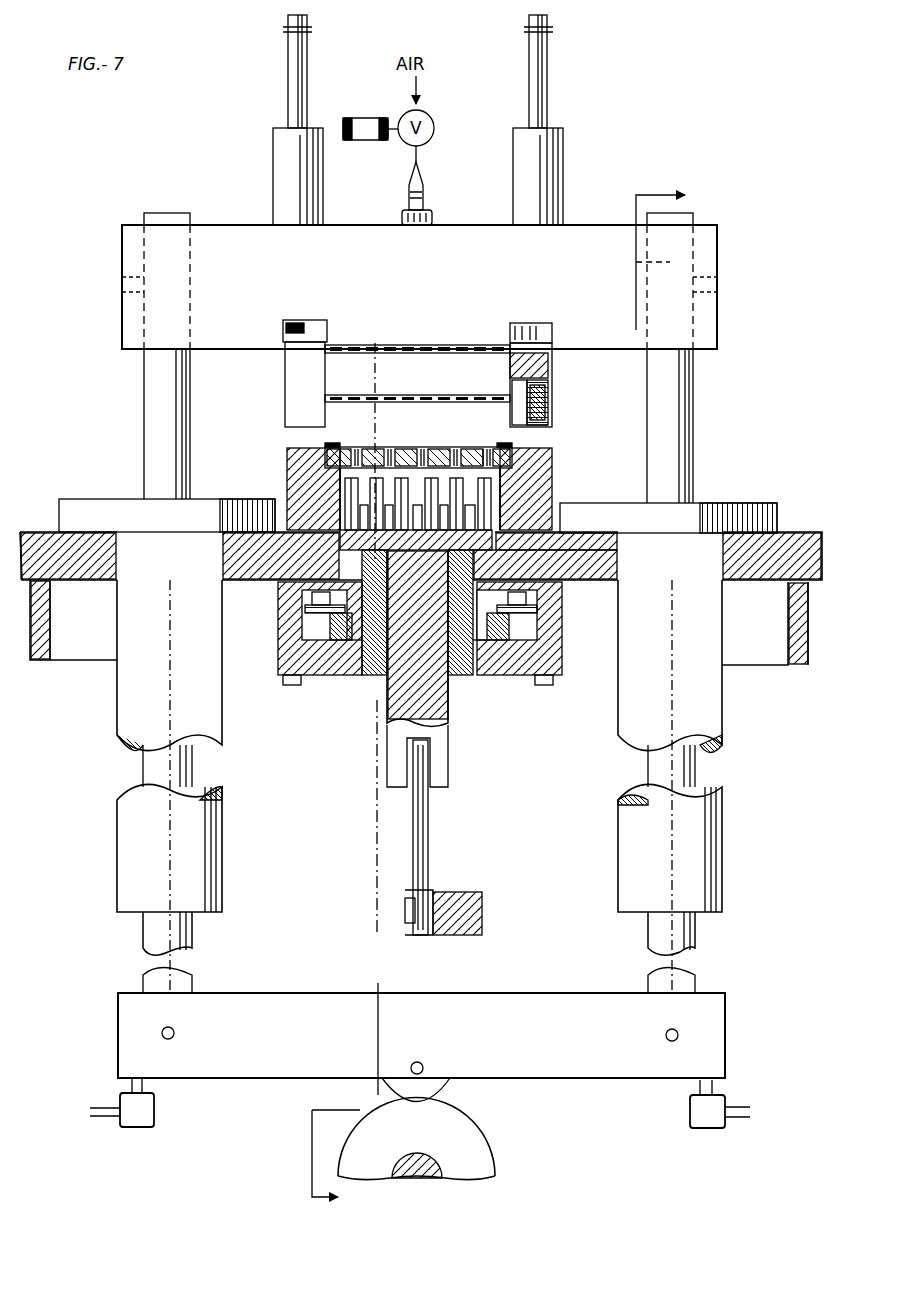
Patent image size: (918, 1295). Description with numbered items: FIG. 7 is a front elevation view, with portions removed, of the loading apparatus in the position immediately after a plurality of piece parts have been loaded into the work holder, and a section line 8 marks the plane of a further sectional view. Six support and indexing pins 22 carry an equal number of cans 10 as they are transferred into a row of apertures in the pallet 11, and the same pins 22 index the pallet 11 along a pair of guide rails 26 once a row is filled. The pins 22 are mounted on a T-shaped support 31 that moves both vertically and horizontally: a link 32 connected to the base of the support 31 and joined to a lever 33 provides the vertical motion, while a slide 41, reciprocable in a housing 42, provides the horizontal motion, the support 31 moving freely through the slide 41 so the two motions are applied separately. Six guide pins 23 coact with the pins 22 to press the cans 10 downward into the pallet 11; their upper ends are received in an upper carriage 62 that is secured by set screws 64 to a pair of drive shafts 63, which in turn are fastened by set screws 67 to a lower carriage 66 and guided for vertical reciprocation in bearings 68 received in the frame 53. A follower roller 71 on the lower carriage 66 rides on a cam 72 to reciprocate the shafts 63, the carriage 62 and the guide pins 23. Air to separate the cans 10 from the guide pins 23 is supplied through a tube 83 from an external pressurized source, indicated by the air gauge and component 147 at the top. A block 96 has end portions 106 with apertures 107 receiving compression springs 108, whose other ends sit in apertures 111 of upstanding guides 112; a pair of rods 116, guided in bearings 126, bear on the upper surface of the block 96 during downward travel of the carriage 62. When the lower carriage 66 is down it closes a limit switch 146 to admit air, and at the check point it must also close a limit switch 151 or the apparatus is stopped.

The section line 8- 8 is at (510, 697).
The cans 10 is at (483, 447).
The pallet 11 is at (336, 447).
The support and indexing pins 22 is at (350, 493).
The guide pins 23 is at (455, 447).
The guide rails 26 is at (300, 462).
The T-shaped support 31 is at (440, 700).
The link 32 is at (414, 845).
The lever 33 is at (472, 892).
The slide 41 is at (374, 665).
The housing 42 is at (323, 662).
The frame 53 is at (60, 535).
The upper carriage 62 is at (710, 330).
The drive shafts 63 is at (156, 445).
The set screws 64 is at (124, 291).
The lower carriage 66 is at (120, 1053).
The set screws 67 is at (162, 1034).
The bearings 68 is at (97, 499).
The follower roller 71 is at (402, 1088).
The cam 72 is at (373, 1130).
The tube 83 is at (424, 190).
The block 96 is at (545, 358).
The end portions 106 is at (548, 385).
The apertures 107 is at (548, 396).
The compression springs 108 is at (547, 405).
The apertures 111 is at (548, 425).
The upstanding guide 112 is at (298, 403).
The rods 116 is at (290, 60).
The bearings 126 is at (290, 176).
The limit switch 146 is at (690, 1107).
The valve 147 is at (368, 119).
The limit switch 151 is at (150, 1112).